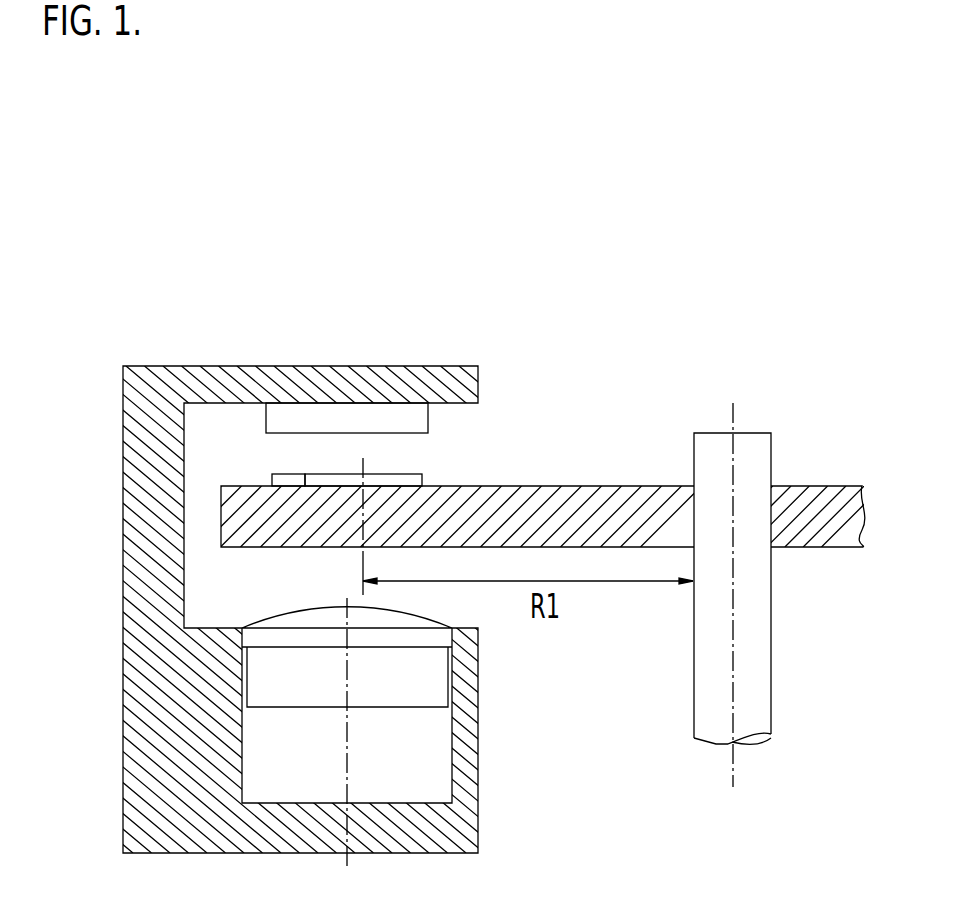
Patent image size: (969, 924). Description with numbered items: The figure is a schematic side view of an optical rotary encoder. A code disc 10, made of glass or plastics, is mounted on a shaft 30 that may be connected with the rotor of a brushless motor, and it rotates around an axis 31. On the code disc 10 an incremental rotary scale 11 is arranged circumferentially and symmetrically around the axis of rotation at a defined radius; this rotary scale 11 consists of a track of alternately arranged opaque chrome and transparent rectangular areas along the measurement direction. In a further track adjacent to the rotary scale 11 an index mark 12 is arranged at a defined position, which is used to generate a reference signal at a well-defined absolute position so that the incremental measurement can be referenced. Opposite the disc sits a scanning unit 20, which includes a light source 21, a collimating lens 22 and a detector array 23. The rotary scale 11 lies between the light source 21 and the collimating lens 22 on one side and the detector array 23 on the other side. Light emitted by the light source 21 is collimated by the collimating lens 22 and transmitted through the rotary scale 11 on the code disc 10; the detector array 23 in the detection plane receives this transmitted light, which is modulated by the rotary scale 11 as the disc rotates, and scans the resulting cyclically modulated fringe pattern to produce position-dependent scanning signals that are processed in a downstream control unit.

The code disc 10 is at (636, 522).
The incremental rotary scale 11 is at (412, 480).
The index mark 12 is at (292, 477).
The scanning unit 20 is at (152, 745).
The light source 21 is at (418, 686).
The collimating lens 22 is at (337, 618).
The detector array 23 is at (408, 420).
The shaft 30 is at (752, 660).
The axis 31 is at (733, 456).